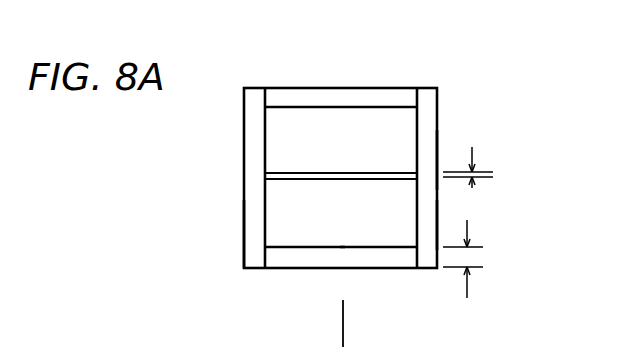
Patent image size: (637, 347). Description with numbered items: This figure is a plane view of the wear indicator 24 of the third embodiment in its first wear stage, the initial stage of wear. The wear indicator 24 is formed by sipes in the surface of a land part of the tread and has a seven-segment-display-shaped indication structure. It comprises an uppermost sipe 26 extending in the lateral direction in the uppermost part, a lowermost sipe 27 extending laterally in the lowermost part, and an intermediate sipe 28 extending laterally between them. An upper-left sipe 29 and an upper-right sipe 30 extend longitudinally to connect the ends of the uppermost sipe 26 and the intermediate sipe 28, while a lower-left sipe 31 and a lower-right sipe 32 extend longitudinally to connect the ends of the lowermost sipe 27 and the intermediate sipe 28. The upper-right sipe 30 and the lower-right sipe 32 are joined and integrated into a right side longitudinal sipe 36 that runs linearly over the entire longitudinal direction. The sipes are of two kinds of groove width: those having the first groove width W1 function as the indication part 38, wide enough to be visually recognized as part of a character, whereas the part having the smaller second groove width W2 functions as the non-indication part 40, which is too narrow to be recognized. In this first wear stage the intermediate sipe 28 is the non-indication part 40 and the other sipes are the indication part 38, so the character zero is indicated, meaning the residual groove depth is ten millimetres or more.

The wear indicator 24 is at (323, 18).
The uppermost sipe 26 is at (365, 98).
The lowermost sipe 27 is at (315, 262).
The intermediate sipe 28 is at (307, 180).
The upper-left sipe 29 is at (244, 128).
The upper-right sipe 30 is at (437, 122).
The lower-left sipe 31 is at (248, 228).
The lower-right sipe 32 is at (437, 222).
The right side longitudinal sipe 36 is at (437, 158).
The indication part 38 is at (402, 262).
The non-indication part 40 is at (363, 178).
The first groove width W1 is at (485, 259).
The second groove width W2 is at (490, 169).